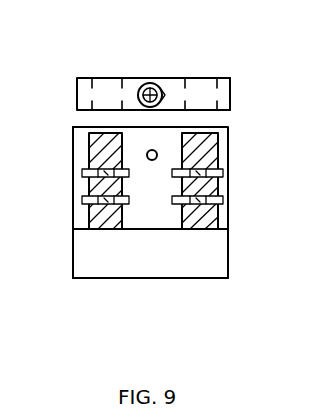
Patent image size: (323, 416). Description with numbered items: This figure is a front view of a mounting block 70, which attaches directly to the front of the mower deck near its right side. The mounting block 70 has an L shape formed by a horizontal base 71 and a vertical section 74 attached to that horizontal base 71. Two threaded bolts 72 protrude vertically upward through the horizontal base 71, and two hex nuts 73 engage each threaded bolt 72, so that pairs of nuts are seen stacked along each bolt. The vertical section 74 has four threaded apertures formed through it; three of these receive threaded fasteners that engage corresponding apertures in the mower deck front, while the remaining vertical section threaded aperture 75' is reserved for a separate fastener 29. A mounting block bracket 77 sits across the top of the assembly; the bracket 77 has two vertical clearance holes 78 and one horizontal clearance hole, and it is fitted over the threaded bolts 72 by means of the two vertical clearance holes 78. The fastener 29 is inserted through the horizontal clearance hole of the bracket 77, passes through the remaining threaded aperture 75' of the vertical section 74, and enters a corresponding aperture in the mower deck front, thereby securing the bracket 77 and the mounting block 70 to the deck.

The fastener 29 is at (153, 83).
The mounting block 70 is at (229, 150).
The horizontal base 71 is at (155, 262).
The threaded bolt 72 is at (101, 217).
The hex nut 73 is at (74, 173).
The vertical section 74 is at (73, 142).
The vertical section threaded aperture 75' is at (220, 125).
The mounting block bracket 77 is at (232, 91).
The vertical clearance hole 78 is at (107, 77).